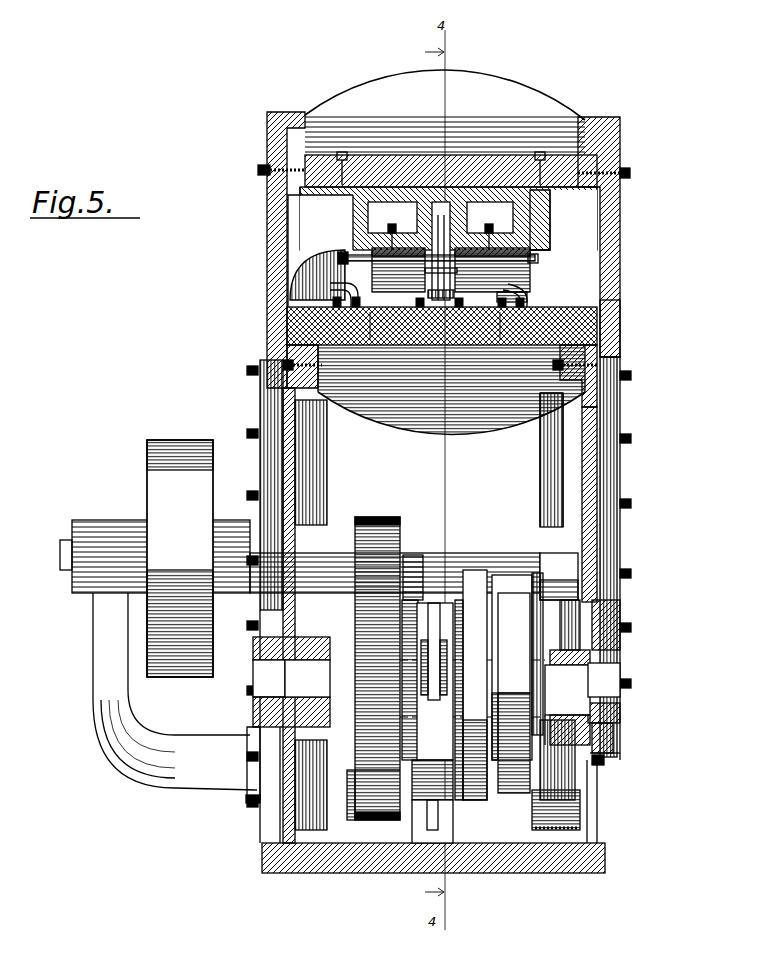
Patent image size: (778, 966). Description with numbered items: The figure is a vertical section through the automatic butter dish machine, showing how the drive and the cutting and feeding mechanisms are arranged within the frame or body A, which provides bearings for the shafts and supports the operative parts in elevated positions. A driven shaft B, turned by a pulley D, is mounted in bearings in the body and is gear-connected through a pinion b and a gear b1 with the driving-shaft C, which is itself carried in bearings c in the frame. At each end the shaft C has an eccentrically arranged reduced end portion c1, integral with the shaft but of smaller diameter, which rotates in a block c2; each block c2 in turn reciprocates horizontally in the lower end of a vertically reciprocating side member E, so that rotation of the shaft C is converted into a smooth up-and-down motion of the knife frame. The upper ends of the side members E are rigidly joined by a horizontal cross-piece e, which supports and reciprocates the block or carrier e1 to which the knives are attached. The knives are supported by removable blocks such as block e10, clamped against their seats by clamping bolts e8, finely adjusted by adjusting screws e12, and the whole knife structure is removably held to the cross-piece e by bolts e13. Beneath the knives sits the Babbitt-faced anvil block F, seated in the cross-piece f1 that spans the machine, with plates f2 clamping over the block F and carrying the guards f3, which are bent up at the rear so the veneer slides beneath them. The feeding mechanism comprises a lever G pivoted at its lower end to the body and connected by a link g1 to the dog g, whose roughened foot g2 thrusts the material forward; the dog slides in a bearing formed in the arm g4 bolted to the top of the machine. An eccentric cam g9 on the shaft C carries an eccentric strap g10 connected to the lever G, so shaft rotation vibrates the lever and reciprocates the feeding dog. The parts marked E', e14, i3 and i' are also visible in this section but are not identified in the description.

The horizontal cross-piece e is at (528, 100).
The vertically reciprocating side member E is at (266, 232).
The right frame wall E' is at (606, 221).
The block or carrier e1 is at (385, 185).
The bolt e14 is at (342, 152).
The bolt or screw e13 is at (541, 152).
The link g1 is at (452, 200).
The removable block e10 is at (392, 226).
The adjusting screw e12 is at (490, 226).
The arm g4 is at (303, 275).
The dog g is at (522, 264).
The clamping bolt e8 is at (538, 260).
The foot g2 is at (520, 293).
The block F is at (612, 282).
The plate f2 is at (287, 306).
The guard f3 is at (372, 318).
The cross-piece f1 is at (455, 318).
The frame or body A is at (296, 496).
The lever G is at (546, 472).
The driven shaft B is at (479, 552).
The pulley D is at (152, 468).
The bearing c is at (252, 758).
The block c2 is at (258, 664).
The eccentrically arranged pin or reduced end portion c1 is at (262, 682).
The driving-shaft C is at (583, 686).
The pinion b is at (382, 530).
The gear b1 is at (355, 800).
The slide block i3 is at (430, 780).
The gear i' is at (493, 738).
The eccentric cam g9 is at (520, 790).
The eccentric strap g10 is at (532, 795).